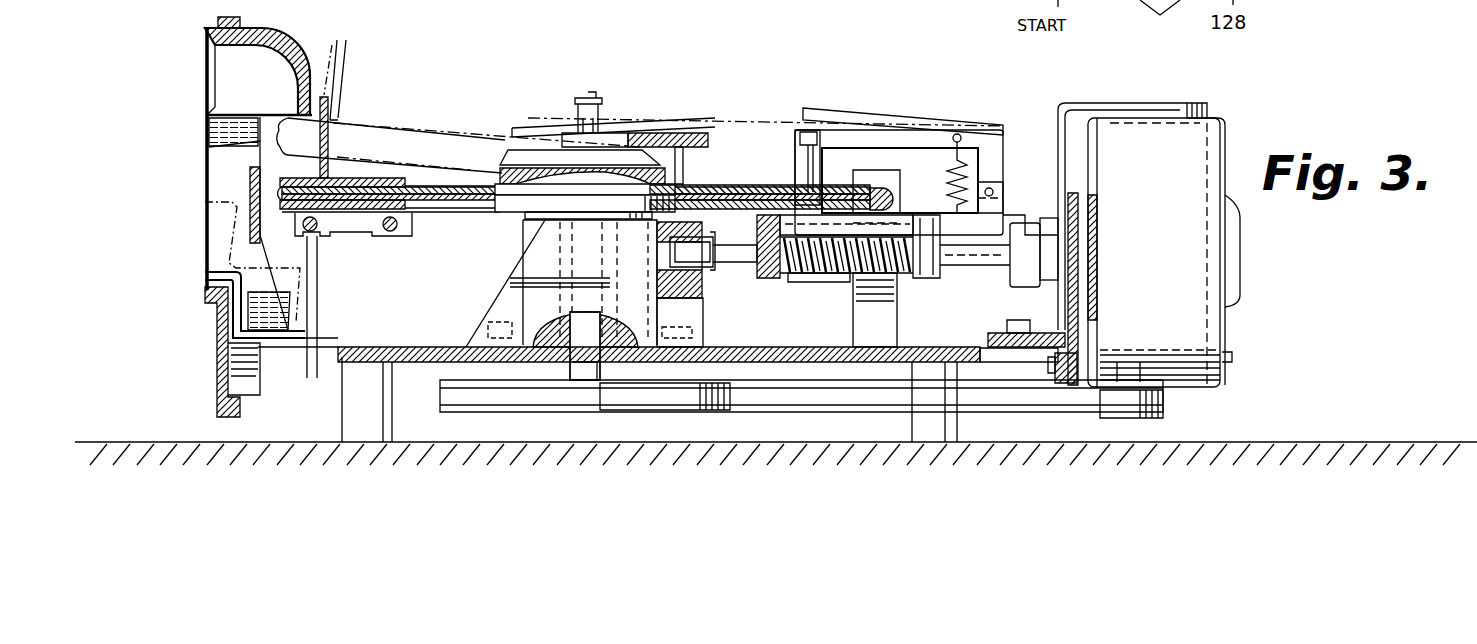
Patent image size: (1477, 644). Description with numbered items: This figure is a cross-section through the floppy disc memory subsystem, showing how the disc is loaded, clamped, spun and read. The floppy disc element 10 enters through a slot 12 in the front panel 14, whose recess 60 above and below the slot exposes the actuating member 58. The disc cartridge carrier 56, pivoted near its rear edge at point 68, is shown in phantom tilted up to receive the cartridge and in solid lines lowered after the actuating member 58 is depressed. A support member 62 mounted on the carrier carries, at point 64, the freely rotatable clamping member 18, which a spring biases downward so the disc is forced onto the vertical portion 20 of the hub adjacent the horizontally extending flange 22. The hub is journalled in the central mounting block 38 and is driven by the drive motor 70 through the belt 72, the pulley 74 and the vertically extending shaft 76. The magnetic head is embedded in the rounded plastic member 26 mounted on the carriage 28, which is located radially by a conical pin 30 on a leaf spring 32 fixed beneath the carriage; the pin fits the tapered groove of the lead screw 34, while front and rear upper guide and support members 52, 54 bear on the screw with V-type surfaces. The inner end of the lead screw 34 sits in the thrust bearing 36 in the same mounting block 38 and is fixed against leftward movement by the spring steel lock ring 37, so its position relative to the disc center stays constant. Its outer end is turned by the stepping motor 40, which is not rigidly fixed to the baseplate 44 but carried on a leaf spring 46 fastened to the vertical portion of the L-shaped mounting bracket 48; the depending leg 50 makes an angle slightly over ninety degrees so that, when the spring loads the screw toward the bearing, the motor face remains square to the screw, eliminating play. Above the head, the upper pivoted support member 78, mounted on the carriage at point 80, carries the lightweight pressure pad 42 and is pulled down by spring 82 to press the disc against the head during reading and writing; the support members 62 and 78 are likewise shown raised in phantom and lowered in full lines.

The floppy disc element 10 is at (279, 200).
The slot 12 is at (230, 128).
The front panel 14 is at (220, 379).
The clamping member 18 is at (505, 163).
The vertical portion of the hub 20 is at (516, 212).
The horizontally extending flange 22 is at (550, 220).
The rounded plastic member 26 is at (798, 205).
The carriage 28 is at (987, 213).
The conical pin 30 is at (898, 270).
The leaf spring 32 is at (883, 273).
The lead screw 34 is at (843, 267).
The thrust bearing 36 is at (700, 275).
The spring steel lock ring 37 is at (713, 273).
The central mounting block 38 is at (504, 310).
The stepping motor 40 is at (1190, 325).
The pressure pad 42 is at (800, 180).
The baseplate 44 is at (425, 353).
The leaf spring 46 is at (1077, 323).
The L-shaped mounting bracket 48 is at (1025, 337).
The depending leg 50 is at (1067, 385).
The front upper guide and support member 52 is at (773, 270).
The rear upper guide and support member 54 is at (923, 270).
The disc cartridge carrier 56 is at (377, 175).
The actuating member 58 is at (218, 197).
The recess 60 is at (228, 72).
The support member 62 is at (663, 133).
The mounting point 64 is at (583, 117).
The pivot point 68 is at (875, 180).
The drive motor 70 is at (1200, 97).
The belt 72 is at (1163, 403).
The pulley 74 is at (553, 403).
The vertically extending shaft 76 is at (603, 330).
The upper pivoted support member 78 is at (863, 128).
The pivot point 80 is at (1003, 185).
The spring 82 is at (943, 180).